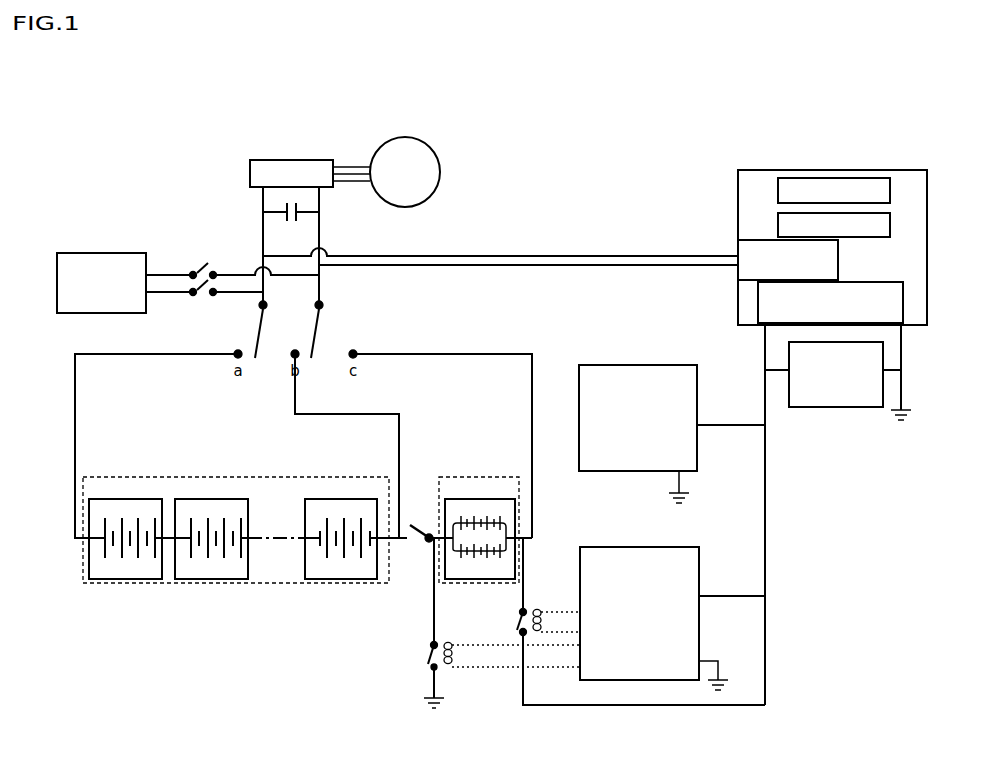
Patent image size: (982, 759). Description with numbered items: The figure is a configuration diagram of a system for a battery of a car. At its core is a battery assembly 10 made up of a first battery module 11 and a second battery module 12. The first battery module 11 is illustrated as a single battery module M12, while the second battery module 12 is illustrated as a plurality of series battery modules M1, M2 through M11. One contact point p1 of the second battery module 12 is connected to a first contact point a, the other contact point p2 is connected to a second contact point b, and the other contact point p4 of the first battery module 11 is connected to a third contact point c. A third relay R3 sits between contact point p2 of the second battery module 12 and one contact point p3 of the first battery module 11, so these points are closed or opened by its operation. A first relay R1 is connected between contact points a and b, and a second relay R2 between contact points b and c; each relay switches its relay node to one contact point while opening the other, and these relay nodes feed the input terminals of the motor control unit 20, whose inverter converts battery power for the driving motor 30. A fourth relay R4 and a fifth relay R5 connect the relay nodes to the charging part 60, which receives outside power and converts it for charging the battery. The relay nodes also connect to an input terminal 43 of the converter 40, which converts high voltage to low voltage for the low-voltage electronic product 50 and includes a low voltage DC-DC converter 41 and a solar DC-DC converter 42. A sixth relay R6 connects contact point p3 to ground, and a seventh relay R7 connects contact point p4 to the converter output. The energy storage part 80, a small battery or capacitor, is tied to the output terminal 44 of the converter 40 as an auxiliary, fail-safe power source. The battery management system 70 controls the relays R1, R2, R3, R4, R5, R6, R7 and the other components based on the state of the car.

The battery assembly 10 is at (238, 703).
The first battery module 11 is at (483, 442).
The second battery module 12 is at (241, 578).
The motor control unit 20 is at (292, 160).
The driving motor 30 is at (405, 137).
The converter 40 is at (814, 237).
The low voltage DC-DC converter (LDC) 41 is at (778, 192).
The solar DC-DC converter (SDC) 42 is at (778, 222).
The input terminal 43 is at (745, 248).
The output terminal 44 is at (758, 298).
The low-voltage electronic product 50 is at (636, 365).
The charging part 60 is at (103, 253).
The battery management system 70 is at (637, 547).
The energy storage part 80 is at (833, 407).
The battery module M1 is at (125, 531).
The battery module M2 is at (205, 531).
The battery module M11 is at (352, 531).
The battery module M12 is at (488, 531).
The first relay R1 is at (248, 333).
The second relay R2 is at (326, 333).
The third relay R3 is at (422, 524).
The fourth relay R4 is at (232, 266).
The fifth relay R5 is at (204, 300).
The sixth relay R6 is at (492, 623).
The seventh relay R7 is at (629, 621).
The contact point p1 is at (74, 542).
The contact point p2 is at (404, 541).
The contact point p3 is at (434, 538).
The contact point p4 is at (522, 536).